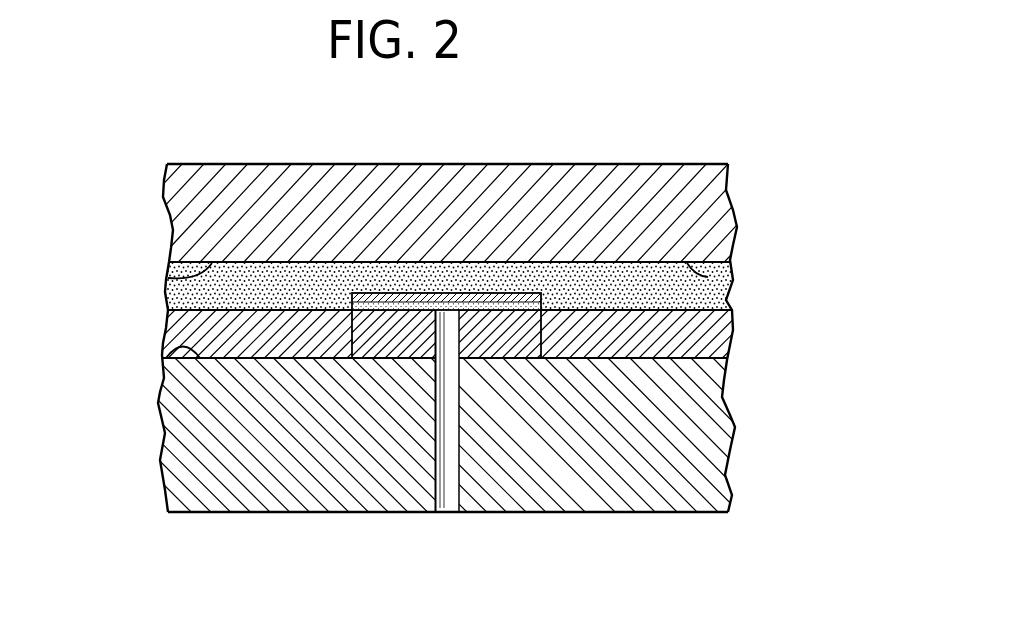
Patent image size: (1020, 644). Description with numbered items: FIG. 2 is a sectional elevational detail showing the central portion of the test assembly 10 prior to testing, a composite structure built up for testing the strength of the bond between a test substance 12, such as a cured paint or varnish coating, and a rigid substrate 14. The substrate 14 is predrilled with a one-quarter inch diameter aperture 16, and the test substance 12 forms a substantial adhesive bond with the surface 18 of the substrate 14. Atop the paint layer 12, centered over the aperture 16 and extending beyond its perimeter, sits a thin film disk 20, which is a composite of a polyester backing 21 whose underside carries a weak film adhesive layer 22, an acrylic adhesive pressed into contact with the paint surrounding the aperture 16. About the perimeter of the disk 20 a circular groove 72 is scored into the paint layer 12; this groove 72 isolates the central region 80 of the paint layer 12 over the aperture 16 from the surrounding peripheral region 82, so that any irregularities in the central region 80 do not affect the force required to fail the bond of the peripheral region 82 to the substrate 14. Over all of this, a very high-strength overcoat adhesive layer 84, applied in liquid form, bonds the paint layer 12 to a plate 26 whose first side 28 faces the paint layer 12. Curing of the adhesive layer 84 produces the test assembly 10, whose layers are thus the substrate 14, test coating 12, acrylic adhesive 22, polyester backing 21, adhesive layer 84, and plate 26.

The test assembly 10 is at (592, 119).
The test substance 12 is at (140, 337).
The rigid substrate 14 is at (755, 414).
The aperture 16 is at (459, 494).
The surface 18 is at (166, 356).
The thin film disk 20 is at (455, 282).
The polyester backing 21 is at (398, 292).
The film adhesive layer 22 is at (397, 310).
The plate 26 is at (748, 188).
The first side 28 is at (168, 278).
The circular groove 72 is at (352, 343).
The central region 80 is at (505, 342).
The peripheral region 82 is at (703, 330).
The overcoat adhesive layer 84 is at (188, 295).